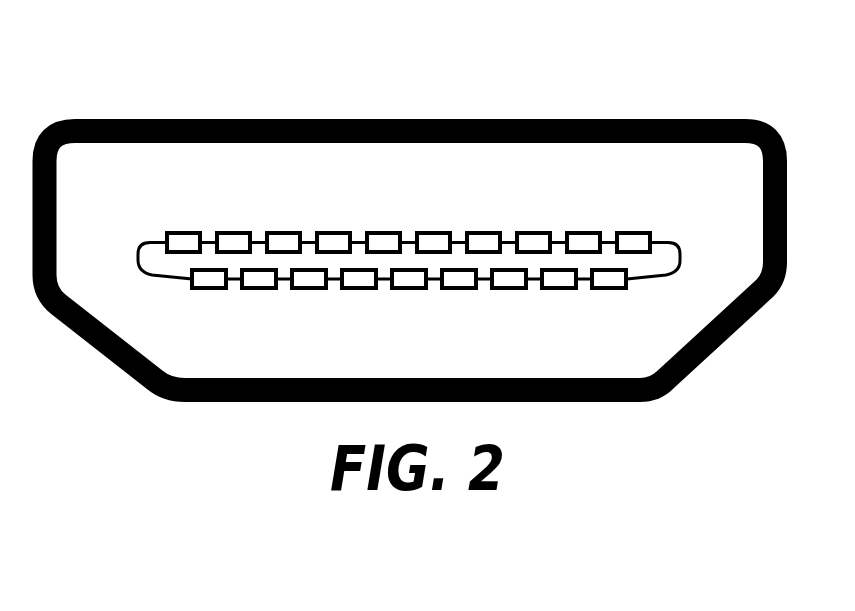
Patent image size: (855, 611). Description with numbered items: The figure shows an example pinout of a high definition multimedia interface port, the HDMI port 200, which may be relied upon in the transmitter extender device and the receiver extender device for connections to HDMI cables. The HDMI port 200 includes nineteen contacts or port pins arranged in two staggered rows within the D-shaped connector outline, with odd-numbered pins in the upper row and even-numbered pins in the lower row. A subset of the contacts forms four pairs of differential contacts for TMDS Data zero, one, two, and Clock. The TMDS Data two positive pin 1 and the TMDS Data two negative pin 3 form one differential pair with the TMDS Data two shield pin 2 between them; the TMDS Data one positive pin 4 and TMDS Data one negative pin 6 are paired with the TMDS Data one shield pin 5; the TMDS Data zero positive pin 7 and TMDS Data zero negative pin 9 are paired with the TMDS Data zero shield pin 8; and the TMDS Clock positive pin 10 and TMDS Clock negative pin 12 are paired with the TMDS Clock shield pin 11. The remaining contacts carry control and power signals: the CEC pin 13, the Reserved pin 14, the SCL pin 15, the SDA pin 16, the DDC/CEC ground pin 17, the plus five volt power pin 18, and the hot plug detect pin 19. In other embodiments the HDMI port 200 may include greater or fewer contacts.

The TMDS Data 2+ pin 1 is at (633, 229).
The TMDS Data 2 Shield pin 2 is at (609, 293).
The TMDS Data 2− pin 3 is at (583, 229).
The TMDS Data 1+ pin 4 is at (559, 293).
The TMDS Data 1 Shield pin 5 is at (533, 229).
The TMDS Data 1− pin 6 is at (509, 293).
The TMDS Data 0+ pin 7 is at (483, 229).
The TMDS Data 0 Shield pin 8 is at (459, 293).
The TMDS Data 0− pin 9 is at (433, 229).
The TMDS Clock+ pin 10 is at (409, 293).
The TMDS Clock Shield pin 11 is at (383, 229).
The TMDS Clock− pin 12 is at (359, 293).
The CEC pin 13 is at (333, 229).
The Reserved pin 14 is at (309, 293).
The SCL pin 15 is at (283, 229).
The SDA pin 16 is at (259, 293).
The DDC/CEC Ground pin 17 is at (233, 229).
The +5V Power pin 18 is at (209, 293).
The Hot Plug Detect pin 19 is at (183, 229).
The HDMI port 200 is at (108, 52).